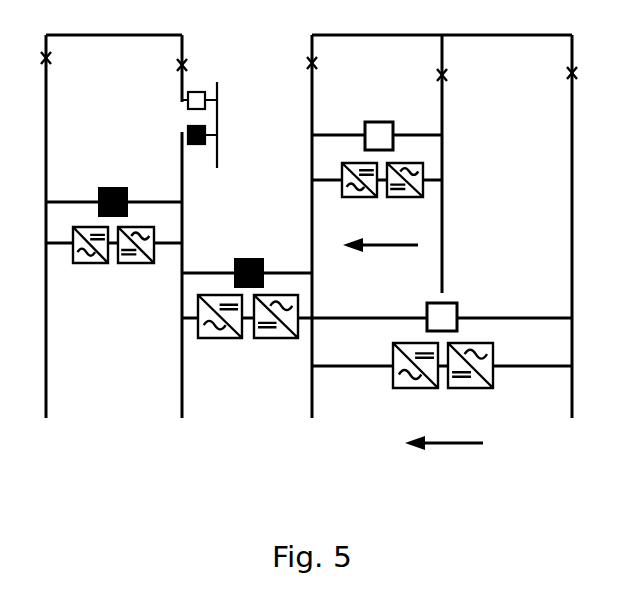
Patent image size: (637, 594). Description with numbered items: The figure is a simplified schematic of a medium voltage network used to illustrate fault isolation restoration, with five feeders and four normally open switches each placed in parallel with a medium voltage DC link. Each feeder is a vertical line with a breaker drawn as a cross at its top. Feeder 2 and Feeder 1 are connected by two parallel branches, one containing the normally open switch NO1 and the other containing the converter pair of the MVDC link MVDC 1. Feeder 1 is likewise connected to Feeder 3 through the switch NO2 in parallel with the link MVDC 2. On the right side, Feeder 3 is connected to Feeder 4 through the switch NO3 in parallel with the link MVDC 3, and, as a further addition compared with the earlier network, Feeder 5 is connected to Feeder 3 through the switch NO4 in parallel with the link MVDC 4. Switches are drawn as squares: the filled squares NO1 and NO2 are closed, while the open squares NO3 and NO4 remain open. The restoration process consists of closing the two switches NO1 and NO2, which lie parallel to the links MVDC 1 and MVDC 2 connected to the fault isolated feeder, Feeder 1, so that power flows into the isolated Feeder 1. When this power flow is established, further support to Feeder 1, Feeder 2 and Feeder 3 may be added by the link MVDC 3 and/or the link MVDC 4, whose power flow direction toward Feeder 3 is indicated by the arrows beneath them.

The NO switch NO1 is at (114, 184).
The NO switch NO2 is at (247, 257).
The NO switch NO3 is at (377, 120).
The NO switch NO4 is at (469, 302).
The MVDC link MVDC1 is at (114, 263).
The MVDC link MVDC2 is at (377, 334).
The MVDC link MVDC3 is at (377, 207).
The MVDC link MVDC4 is at (442, 396).
The feeder Feeder1 is at (167, 133).
The feeder Feeder2 is at (35, 150).
The feeder Feeder3 is at (300, 149).
The feeder Feeder4 is at (457, 157).
The feeder Feeder5 is at (597, 156).